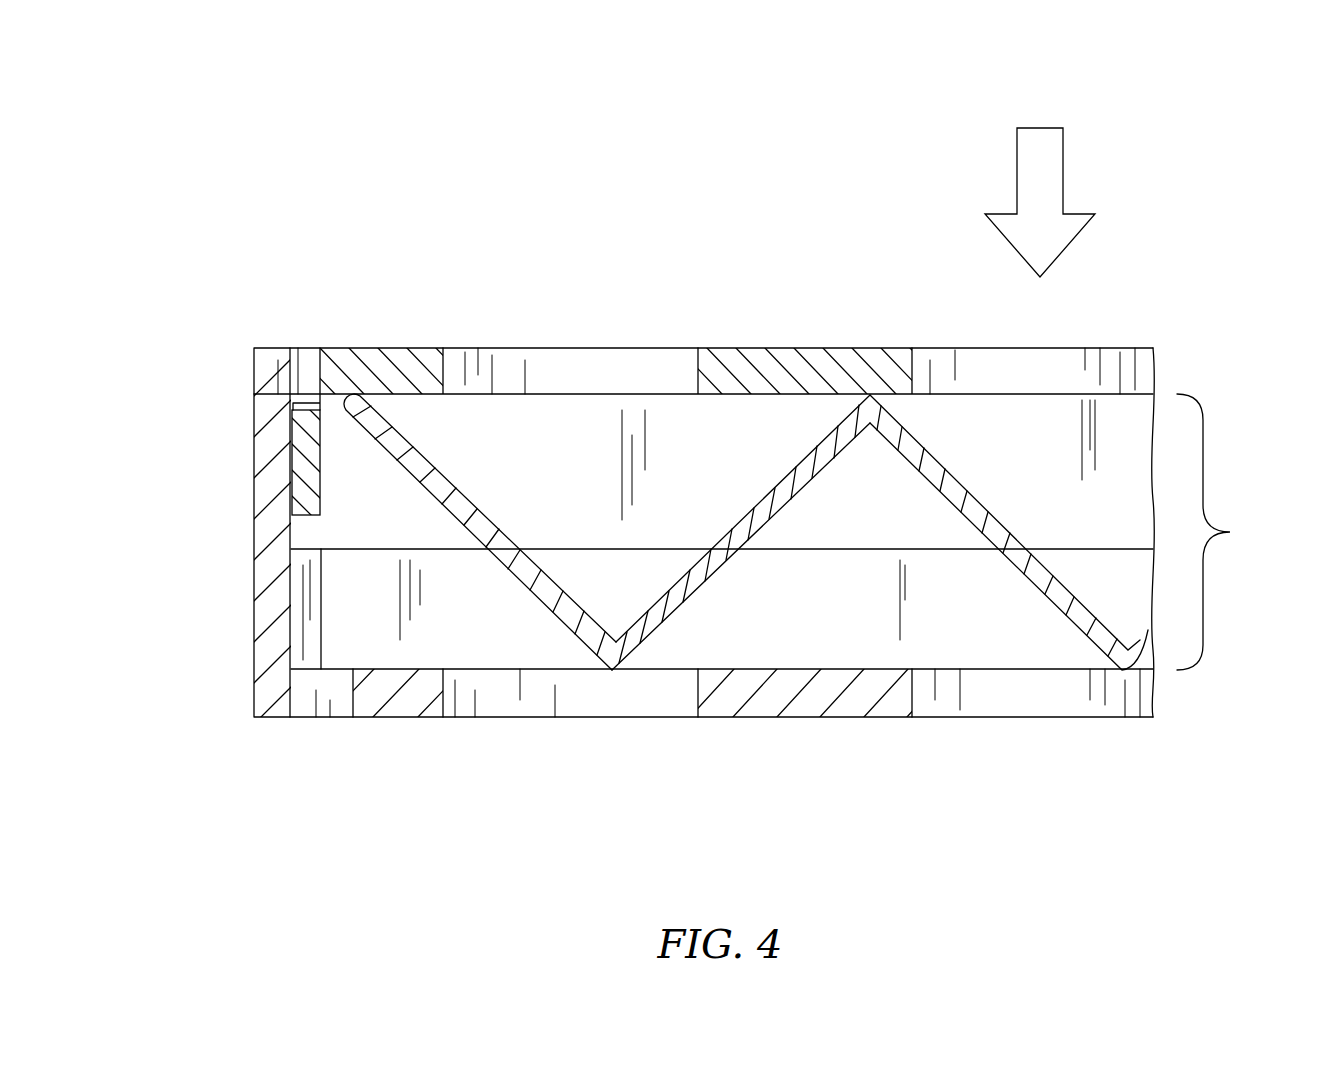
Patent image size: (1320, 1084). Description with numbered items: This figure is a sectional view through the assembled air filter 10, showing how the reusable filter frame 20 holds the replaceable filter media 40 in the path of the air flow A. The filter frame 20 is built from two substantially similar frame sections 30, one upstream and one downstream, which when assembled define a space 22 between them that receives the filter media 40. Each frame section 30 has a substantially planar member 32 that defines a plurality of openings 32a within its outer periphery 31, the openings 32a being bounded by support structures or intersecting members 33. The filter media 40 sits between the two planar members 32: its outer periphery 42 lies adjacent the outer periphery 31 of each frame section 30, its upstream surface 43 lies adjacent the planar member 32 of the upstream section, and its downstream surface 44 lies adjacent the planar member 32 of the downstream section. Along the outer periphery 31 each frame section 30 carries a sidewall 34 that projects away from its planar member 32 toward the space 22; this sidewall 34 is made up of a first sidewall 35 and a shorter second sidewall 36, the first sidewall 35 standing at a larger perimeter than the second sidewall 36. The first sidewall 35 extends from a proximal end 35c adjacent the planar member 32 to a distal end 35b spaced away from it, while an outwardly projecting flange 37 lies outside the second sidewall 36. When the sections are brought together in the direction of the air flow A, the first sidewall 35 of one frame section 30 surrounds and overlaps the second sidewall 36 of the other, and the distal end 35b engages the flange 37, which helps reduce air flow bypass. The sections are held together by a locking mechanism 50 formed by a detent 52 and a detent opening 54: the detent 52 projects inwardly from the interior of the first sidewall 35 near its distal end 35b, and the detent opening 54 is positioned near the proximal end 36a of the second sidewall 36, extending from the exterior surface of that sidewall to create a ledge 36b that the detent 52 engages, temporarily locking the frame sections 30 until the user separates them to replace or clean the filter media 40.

The air filter 10 is at (947, 122).
The air flow A is at (1053, 165).
The filter frame 20 is at (1178, 352).
The space 22 is at (1217, 532).
The frame section 30 is at (848, 340).
The outer periphery 31 is at (307, 742).
The planar member 32 is at (427, 340).
The openings 32a is at (583, 358).
The intersecting members 33 is at (388, 350).
The sidewall 34 is at (333, 585).
The first sidewall 35 is at (990, 460).
The distal end 35b is at (257, 413).
The proximal end 35c is at (260, 715).
The second sidewall 36 is at (320, 515).
The proximal end 36a is at (322, 398).
The ledge 36b is at (318, 404).
The flange 37 is at (262, 374).
The filter media 40 is at (746, 532).
The outer periphery 42 is at (438, 423).
The upstream surface 43 is at (790, 458).
The downstream surface 44 is at (770, 528).
The locking mechanism 50 is at (232, 381).
The detent 52 is at (303, 385).
The detent opening 54 is at (275, 350).